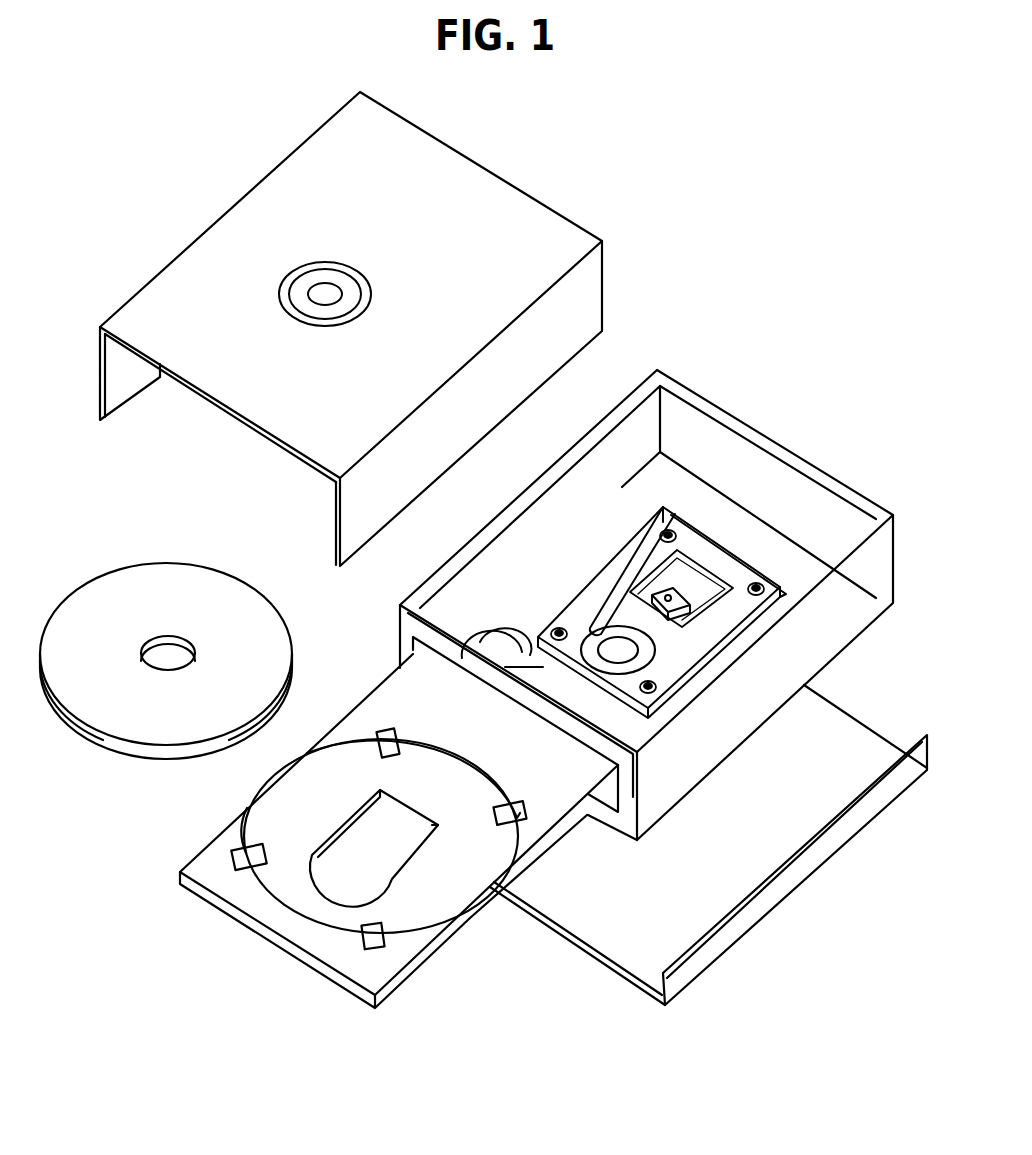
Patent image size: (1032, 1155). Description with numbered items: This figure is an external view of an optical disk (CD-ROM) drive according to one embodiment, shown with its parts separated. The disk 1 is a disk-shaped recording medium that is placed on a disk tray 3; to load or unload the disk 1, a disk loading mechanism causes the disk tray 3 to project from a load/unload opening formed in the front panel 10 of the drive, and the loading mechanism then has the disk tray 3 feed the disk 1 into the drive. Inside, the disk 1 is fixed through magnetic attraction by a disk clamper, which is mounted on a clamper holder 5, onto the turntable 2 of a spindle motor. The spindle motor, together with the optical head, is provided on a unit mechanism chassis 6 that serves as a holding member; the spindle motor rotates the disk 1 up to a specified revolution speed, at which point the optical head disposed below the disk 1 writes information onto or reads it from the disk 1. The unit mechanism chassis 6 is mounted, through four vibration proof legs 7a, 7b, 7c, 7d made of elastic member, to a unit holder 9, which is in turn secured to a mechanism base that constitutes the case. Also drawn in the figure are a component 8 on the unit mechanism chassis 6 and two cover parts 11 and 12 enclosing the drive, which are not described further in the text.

The disk 1 is at (108, 590).
The turntable 2 is at (596, 666).
The disk tray 3 is at (276, 905).
The clamper holder 5 is at (320, 284).
The unit mechanism chassis 6 is at (596, 604).
The vibration proof leg 7a is at (656, 688).
The vibration proof leg 7b is at (558, 628).
The vibration proof leg 7c is at (668, 532).
The vibration proof leg 7d is at (756, 586).
The optical pickup 8 is at (666, 596).
The unit holder 9 is at (742, 522).
The front panel 10 is at (400, 625).
The top cover 11 is at (468, 178).
The bottom cover 12 is at (860, 736).